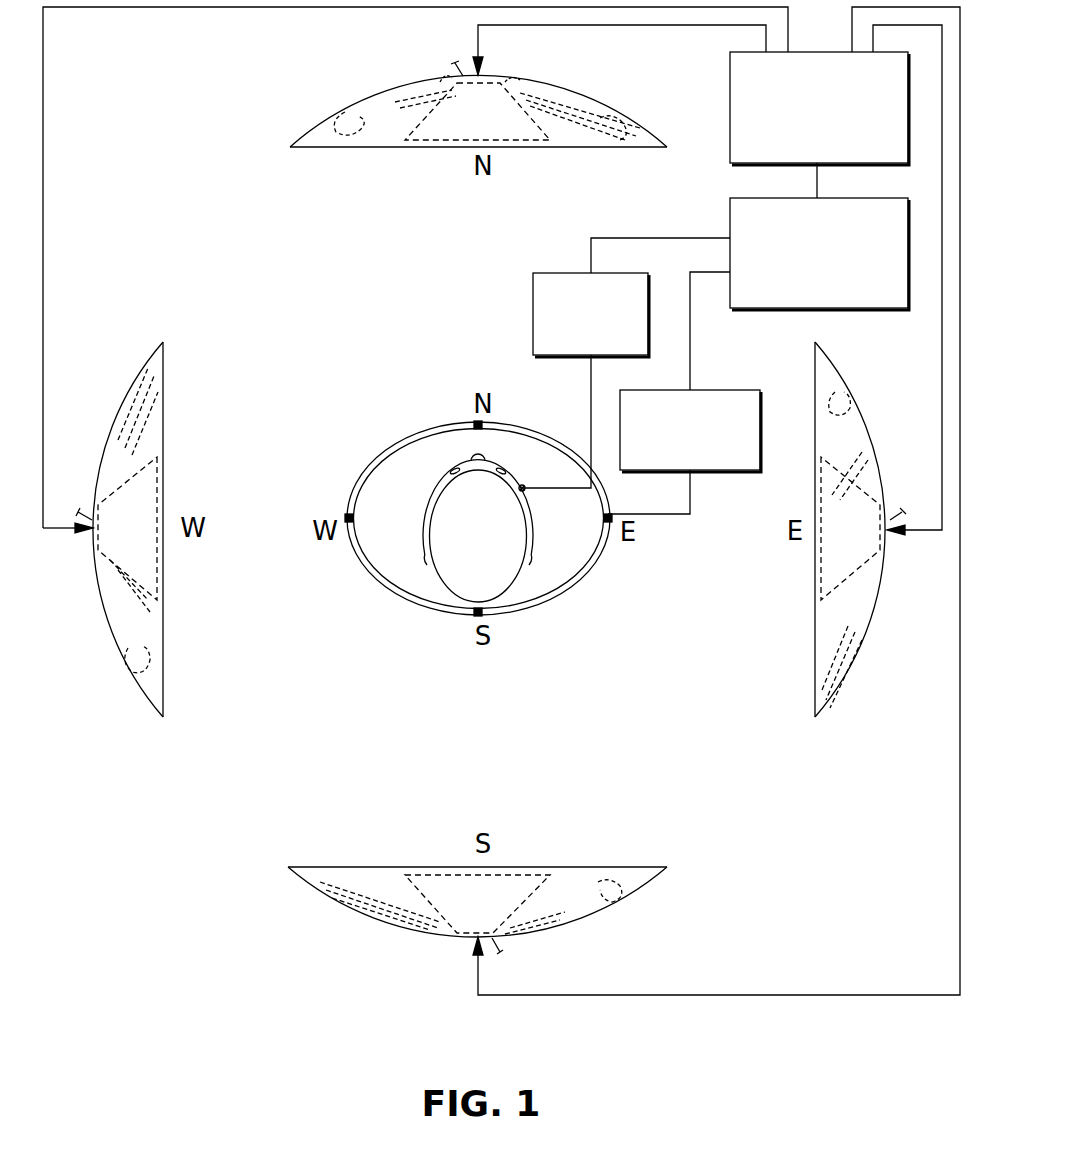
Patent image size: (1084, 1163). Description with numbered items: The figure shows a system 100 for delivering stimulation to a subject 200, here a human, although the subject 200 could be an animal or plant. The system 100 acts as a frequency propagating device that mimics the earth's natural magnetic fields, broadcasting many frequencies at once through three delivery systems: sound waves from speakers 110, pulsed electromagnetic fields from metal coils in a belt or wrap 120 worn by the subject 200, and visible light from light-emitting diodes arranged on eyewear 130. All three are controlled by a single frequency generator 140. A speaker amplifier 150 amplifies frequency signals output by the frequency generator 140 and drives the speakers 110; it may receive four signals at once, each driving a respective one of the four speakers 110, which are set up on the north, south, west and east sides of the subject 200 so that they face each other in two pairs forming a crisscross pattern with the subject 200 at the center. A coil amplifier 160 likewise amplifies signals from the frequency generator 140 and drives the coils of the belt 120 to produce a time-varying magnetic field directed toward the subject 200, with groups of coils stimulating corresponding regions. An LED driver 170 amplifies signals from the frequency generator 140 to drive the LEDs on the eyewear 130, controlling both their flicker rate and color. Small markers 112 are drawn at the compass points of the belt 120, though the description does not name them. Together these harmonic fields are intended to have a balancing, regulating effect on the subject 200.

The system 100 is at (152, 63).
The speakers 110 is at (385, 138).
The marker 112 is at (477, 423).
The belt or wrap 120 is at (378, 582).
The eyewear 130 is at (534, 523).
The frequency generator 140 is at (730, 218).
The speaker amplifier 150 is at (730, 98).
The coil amplifier 160 is at (723, 390).
The LED driver 170 is at (557, 273).
The subject 200 is at (452, 568).